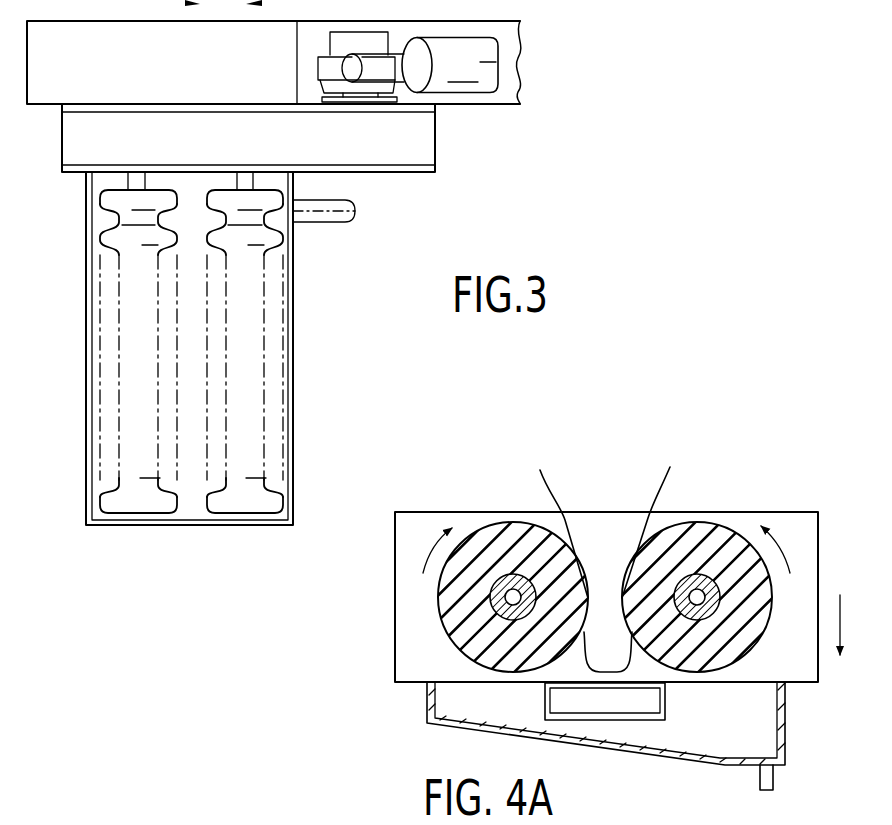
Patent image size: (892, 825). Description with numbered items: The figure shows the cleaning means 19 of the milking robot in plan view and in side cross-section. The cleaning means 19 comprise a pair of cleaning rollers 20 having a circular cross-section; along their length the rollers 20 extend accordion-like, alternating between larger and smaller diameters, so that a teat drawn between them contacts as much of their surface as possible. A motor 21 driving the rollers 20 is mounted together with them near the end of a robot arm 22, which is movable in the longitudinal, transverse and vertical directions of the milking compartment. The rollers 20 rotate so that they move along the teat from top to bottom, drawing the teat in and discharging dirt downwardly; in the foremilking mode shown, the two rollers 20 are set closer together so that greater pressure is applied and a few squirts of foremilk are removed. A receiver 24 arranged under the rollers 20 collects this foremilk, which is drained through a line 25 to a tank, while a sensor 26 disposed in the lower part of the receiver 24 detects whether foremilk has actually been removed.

In FIG. 3, the cleaning means 19 is at (308, 366).
In FIG. 4A, the cleaning means 19 is at (390, 644).
In FIG. 3, the cleaning rollers 20 is at (248, 492).
In FIG. 4A, the cleaning rollers 20 is at (493, 538).
In FIG. 3, the motor 21 is at (475, 82).
In FIG. 3, the robot arm 22 is at (513, 62).
In FIG. 3, the receiver 24 is at (97, 438).
In FIG. 4A, the receiver 24 is at (667, 755).
In FIG. 3, the line 25 is at (333, 210).
In FIG. 4A, the line 25 is at (763, 777).
In FIG. 4A, the sensor 26 is at (650, 702).